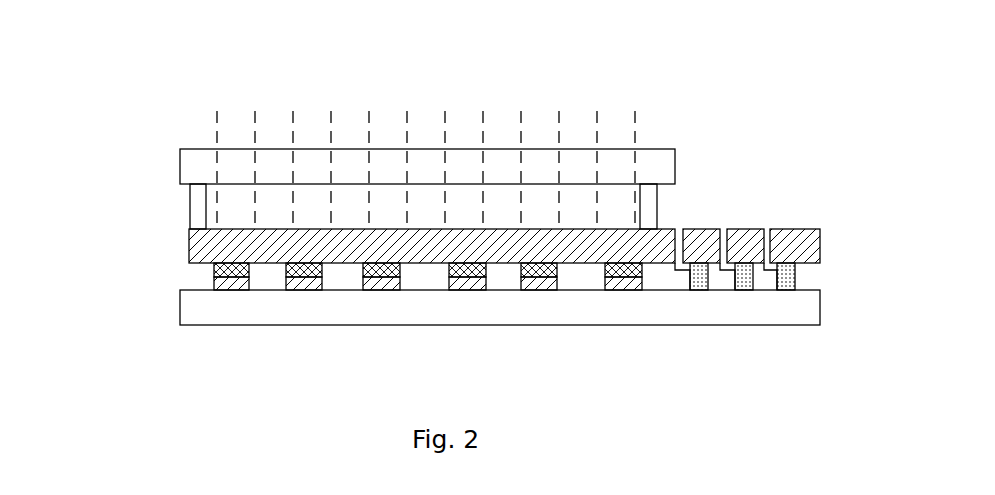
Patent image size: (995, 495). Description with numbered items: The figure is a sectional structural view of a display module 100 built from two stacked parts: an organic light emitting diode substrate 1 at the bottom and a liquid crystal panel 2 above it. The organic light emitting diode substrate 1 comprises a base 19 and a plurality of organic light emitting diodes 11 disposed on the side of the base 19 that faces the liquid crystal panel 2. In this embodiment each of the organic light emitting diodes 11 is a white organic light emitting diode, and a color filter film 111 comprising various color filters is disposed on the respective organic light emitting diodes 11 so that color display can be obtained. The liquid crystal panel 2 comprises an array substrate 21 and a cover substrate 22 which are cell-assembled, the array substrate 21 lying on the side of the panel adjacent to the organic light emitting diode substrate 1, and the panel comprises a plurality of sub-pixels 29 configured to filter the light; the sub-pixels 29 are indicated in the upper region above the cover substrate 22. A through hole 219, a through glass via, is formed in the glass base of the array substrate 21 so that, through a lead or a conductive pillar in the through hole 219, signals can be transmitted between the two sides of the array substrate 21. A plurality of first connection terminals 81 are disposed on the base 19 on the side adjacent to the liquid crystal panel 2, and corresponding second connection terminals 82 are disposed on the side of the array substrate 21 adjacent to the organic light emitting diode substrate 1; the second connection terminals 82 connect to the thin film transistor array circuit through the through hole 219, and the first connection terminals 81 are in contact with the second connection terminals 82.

The display module 100 is at (727, 168).
The organic light emitting diode substrate 1 is at (80, 265).
The base 19 is at (194, 306).
The organic light emitting diodes 11 is at (618, 283).
The color filter film 111 is at (535, 272).
The first connection terminals 81 is at (700, 285).
The second connection terminals 82 is at (747, 283).
The liquid crystal panel 2 is at (80, 172).
The array substrate 21 is at (200, 241).
The cover substrate 22 is at (194, 170).
The through hole 219 is at (793, 237).
The sub-pixels 29 is at (426, 170).